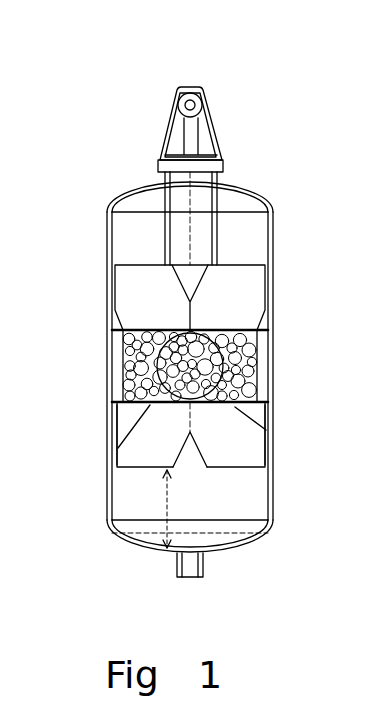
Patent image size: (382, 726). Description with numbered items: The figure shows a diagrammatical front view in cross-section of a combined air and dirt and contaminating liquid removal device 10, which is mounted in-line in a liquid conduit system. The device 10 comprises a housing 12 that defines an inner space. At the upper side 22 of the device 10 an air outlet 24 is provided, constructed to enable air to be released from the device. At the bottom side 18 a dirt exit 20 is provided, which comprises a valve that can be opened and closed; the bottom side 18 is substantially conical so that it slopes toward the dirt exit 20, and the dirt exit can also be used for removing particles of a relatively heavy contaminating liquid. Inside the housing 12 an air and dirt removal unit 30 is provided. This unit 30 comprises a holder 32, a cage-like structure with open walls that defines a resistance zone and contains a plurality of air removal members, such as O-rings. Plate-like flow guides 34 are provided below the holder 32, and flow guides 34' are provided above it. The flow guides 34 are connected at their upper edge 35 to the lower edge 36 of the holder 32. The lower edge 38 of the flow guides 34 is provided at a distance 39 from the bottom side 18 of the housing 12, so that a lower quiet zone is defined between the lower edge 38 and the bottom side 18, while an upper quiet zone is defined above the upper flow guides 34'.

The combined air and dirt and contaminating liquid removal device 10 is at (287, 138).
The housing 12 is at (273, 233).
The bottom side 18 is at (140, 549).
The dirt exit 20 is at (208, 567).
The upper side 22 is at (150, 140).
The air outlet 24 is at (200, 98).
The air and dirt removal unit 30 is at (272, 408).
The holder 32 is at (273, 325).
The flow guides 34' is at (190, 297).
The flow guides 34 is at (182, 488).
The upper edge 35 is at (115, 450).
The lower edge 36 is at (116, 412).
The lower edge 38 is at (138, 468).
The distance 39 is at (167, 512).